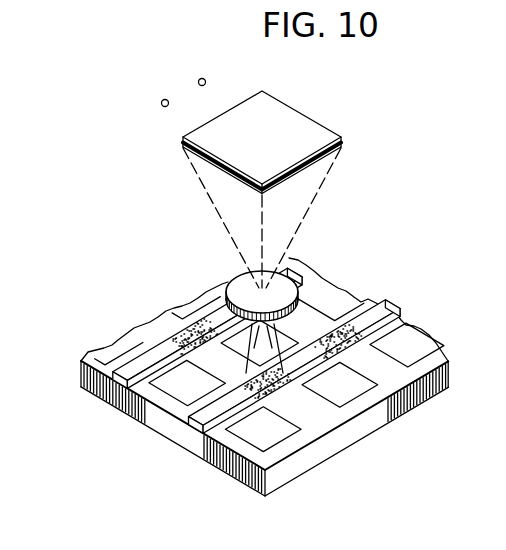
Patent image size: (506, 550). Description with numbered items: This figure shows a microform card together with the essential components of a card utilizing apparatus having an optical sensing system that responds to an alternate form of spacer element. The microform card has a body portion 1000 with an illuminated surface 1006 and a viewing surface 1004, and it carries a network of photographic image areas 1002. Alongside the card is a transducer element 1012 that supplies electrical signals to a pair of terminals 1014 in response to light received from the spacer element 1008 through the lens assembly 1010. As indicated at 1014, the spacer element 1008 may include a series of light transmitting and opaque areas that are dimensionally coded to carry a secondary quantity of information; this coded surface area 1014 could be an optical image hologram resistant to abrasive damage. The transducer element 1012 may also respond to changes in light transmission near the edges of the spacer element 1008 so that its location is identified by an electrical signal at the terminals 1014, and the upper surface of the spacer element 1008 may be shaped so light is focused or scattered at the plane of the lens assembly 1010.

The body portion 1000 is at (334, 440).
The photographic image areas 1002 is at (296, 374).
The viewing surface 1004 is at (170, 322).
The illuminated surface 1006 is at (170, 437).
The spacer element 1008 is at (150, 358).
The lens assembly 1010 is at (278, 290).
The transducer element 1012 is at (273, 127).
The terminals 1014 is at (247, 100).